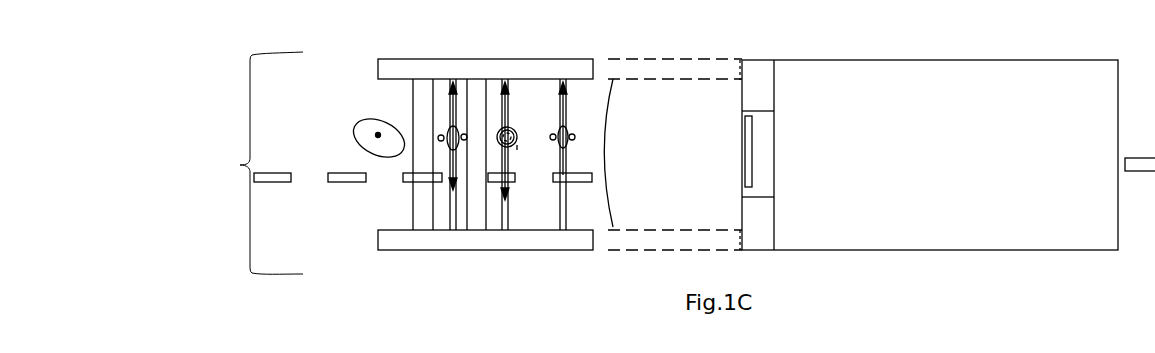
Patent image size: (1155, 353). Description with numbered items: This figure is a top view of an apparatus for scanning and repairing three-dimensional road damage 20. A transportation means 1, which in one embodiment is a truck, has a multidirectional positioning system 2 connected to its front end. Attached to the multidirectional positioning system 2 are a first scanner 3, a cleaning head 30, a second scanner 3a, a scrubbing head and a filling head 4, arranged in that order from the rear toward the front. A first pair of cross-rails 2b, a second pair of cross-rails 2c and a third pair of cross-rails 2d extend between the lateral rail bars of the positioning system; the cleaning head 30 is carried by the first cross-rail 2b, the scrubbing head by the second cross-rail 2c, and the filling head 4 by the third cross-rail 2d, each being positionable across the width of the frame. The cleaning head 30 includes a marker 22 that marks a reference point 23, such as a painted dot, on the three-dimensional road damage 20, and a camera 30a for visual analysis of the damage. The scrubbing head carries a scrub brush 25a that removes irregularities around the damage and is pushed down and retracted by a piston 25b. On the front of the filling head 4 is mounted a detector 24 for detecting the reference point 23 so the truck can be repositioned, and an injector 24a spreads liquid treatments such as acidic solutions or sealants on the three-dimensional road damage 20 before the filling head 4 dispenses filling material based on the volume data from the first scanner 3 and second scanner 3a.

The transportation means 1 is at (868, 256).
The multidirectional positioning system 2 is at (240, 165).
The first pair of cross-rails 2b is at (449, 80).
The second pair of cross-rails 2c is at (502, 80).
The third pair of cross-rails 2d is at (560, 80).
The first scanner 3 is at (422, 92).
The second scanner 3a is at (478, 218).
The filling head 4 is at (568, 133).
The three-dimensional road damage 20 is at (354, 138).
The marker 22 is at (438, 137).
The reference point 23 is at (376, 135).
The detector 24 is at (575, 136).
The injector 24a is at (553, 142).
The scrub brush 25a is at (516, 146).
The piston 25b is at (516, 129).
The cleaning head 30 is at (440, 142).
The camera 30a is at (464, 132).